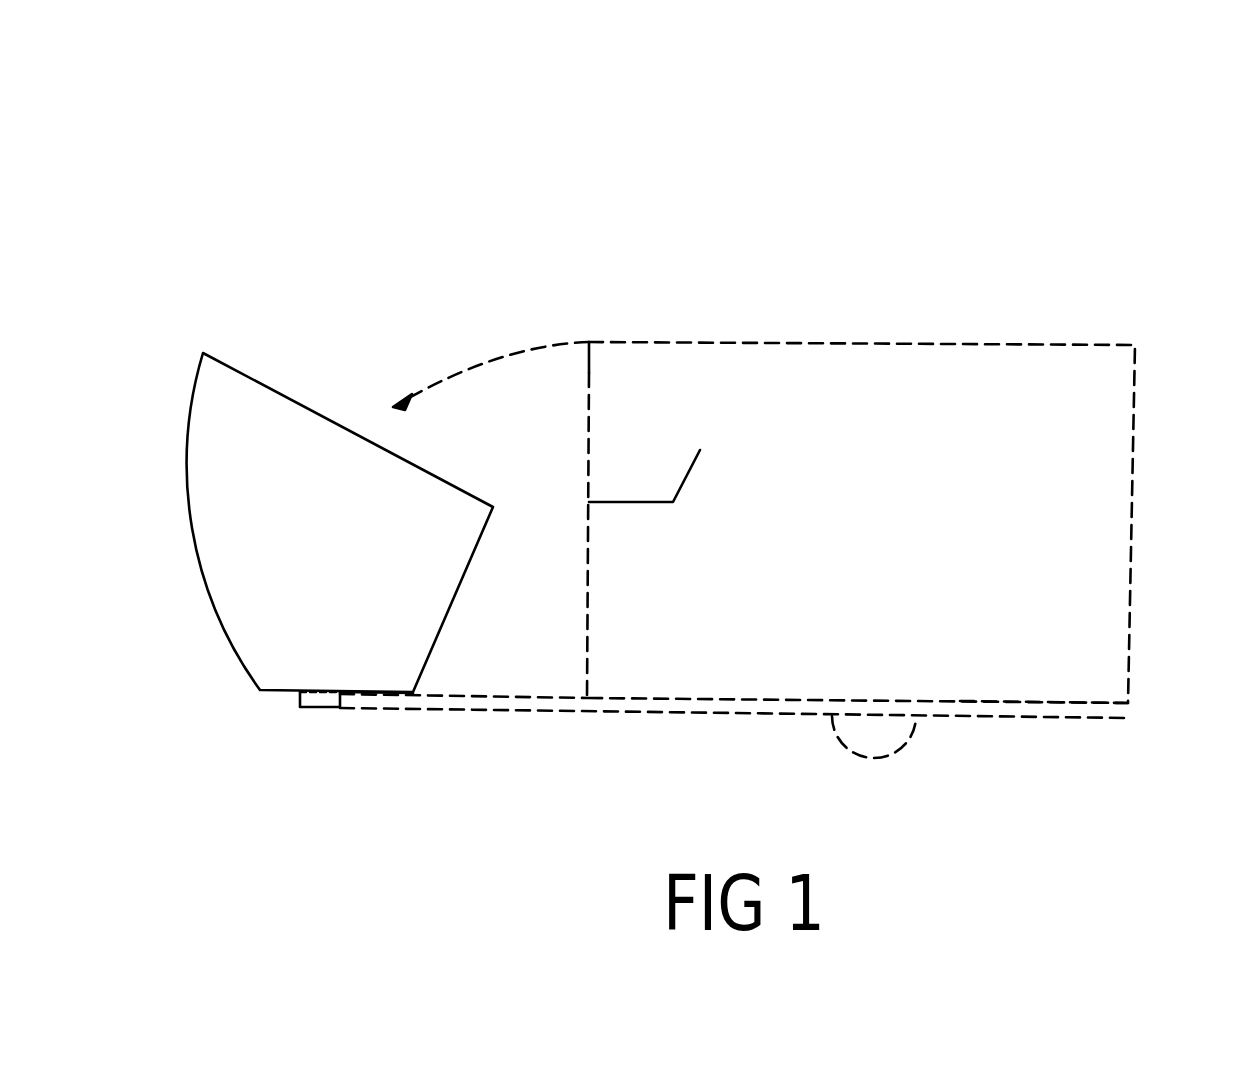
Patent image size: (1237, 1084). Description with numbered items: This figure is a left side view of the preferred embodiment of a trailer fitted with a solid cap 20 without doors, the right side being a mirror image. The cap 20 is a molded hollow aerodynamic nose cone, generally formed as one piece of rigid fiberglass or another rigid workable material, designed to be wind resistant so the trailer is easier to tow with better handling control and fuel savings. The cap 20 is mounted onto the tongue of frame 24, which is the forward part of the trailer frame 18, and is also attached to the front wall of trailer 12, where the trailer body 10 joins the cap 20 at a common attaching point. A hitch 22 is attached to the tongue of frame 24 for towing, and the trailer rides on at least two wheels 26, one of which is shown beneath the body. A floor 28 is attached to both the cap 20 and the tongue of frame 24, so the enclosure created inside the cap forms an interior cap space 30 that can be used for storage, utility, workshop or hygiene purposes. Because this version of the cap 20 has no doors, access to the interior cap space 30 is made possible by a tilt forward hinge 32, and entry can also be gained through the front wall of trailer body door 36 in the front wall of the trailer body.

The trailer body 10 is at (928, 342).
The front wall of trailer 12 is at (593, 387).
The frame 18 is at (1047, 698).
The cap 20 is at (370, 430).
The hitch 22 is at (303, 710).
The tongue of frame 24 is at (467, 715).
The wheel 26 is at (913, 742).
The floor 28 is at (433, 698).
The interior cap space 30 is at (257, 435).
The hinge 32 is at (393, 700).
The front wall of trailer body door 36 is at (700, 450).